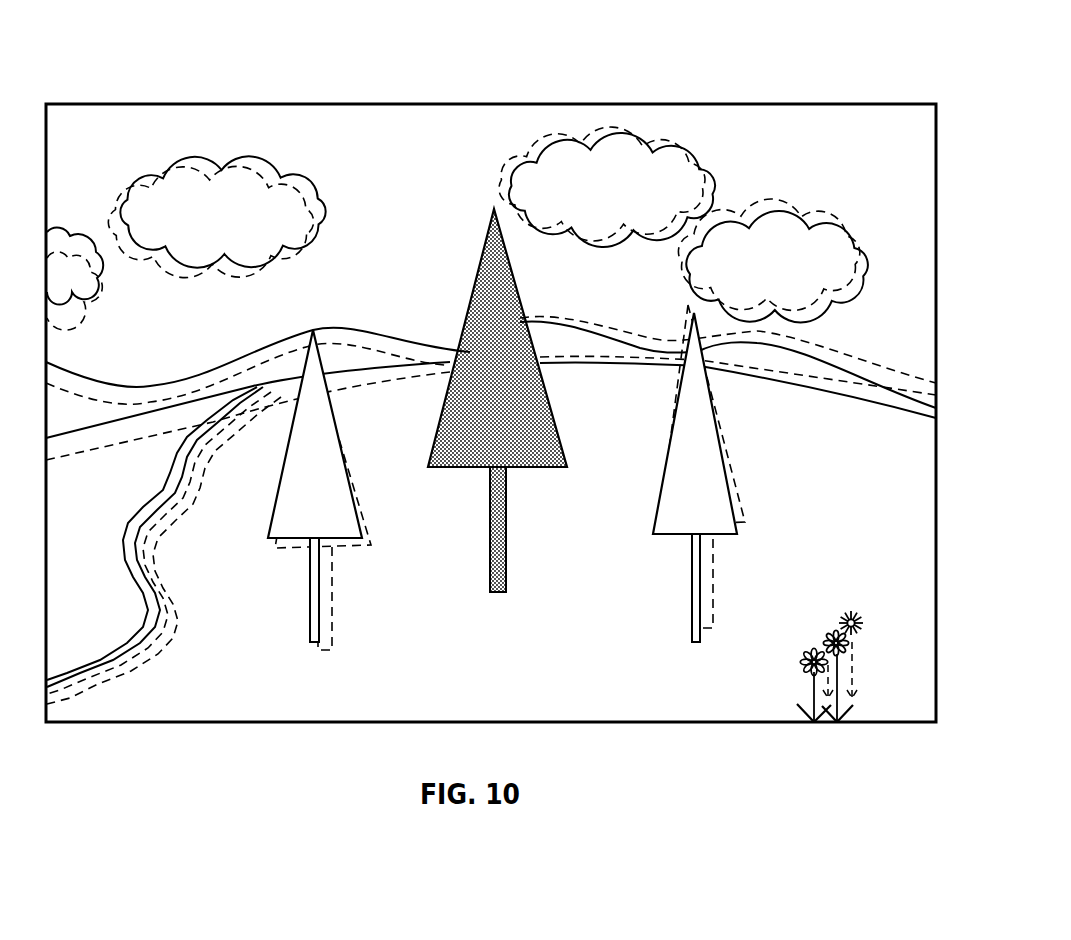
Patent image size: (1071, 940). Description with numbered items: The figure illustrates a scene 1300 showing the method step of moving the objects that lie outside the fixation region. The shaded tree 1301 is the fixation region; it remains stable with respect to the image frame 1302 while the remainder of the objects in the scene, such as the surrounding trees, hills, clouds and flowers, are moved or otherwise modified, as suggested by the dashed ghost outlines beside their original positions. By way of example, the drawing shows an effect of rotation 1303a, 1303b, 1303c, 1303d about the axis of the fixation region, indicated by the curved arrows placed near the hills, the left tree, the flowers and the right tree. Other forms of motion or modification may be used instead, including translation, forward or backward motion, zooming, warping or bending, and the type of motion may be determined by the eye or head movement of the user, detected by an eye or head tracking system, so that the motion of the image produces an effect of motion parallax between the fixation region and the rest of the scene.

The scene 1300 is at (735, 29).
The shaded tree 1301 is at (476, 270).
The image frame 1302 is at (118, 103).
The rotation 1303a is at (295, 283).
The rotation 1303b is at (347, 660).
The rotation 1303c is at (788, 594).
The rotation 1303d is at (675, 300).